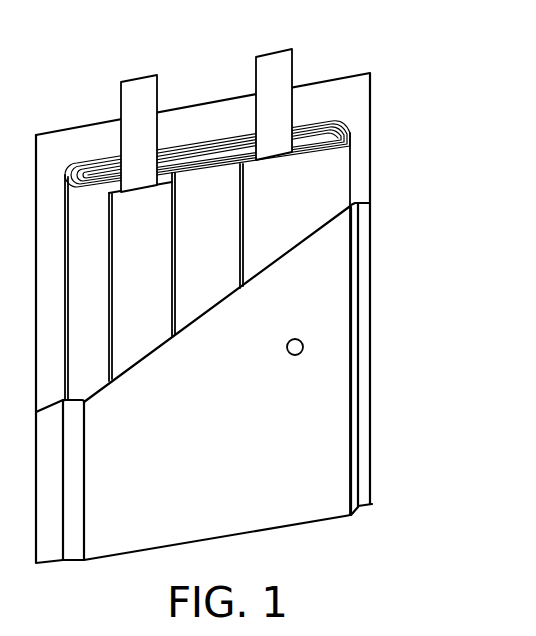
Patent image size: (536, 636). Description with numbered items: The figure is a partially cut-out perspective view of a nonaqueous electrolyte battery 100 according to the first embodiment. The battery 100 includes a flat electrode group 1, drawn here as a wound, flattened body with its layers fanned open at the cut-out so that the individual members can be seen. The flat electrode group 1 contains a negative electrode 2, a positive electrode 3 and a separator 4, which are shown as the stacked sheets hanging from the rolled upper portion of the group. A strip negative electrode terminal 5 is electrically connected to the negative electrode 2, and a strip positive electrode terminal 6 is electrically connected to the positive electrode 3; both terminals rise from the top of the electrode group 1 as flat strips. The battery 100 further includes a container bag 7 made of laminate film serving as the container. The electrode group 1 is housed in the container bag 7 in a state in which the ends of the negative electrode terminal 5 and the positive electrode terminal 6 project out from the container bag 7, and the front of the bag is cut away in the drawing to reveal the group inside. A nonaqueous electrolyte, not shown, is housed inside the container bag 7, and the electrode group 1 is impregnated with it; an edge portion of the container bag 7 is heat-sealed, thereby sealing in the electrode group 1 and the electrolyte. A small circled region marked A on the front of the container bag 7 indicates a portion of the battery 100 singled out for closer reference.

The nonaqueous electrolyte battery 100 is at (252, 286).
The flat electrode group 1 is at (264, 318).
The negative electrode 2 is at (327, 171).
The positive electrode 3 is at (143, 250).
The separator 4 is at (218, 212).
The negative electrode terminal 5 is at (275, 67).
The positive electrode terminal 6 is at (138, 88).
The container bag 7 is at (325, 417).
The portion A is at (303, 345).